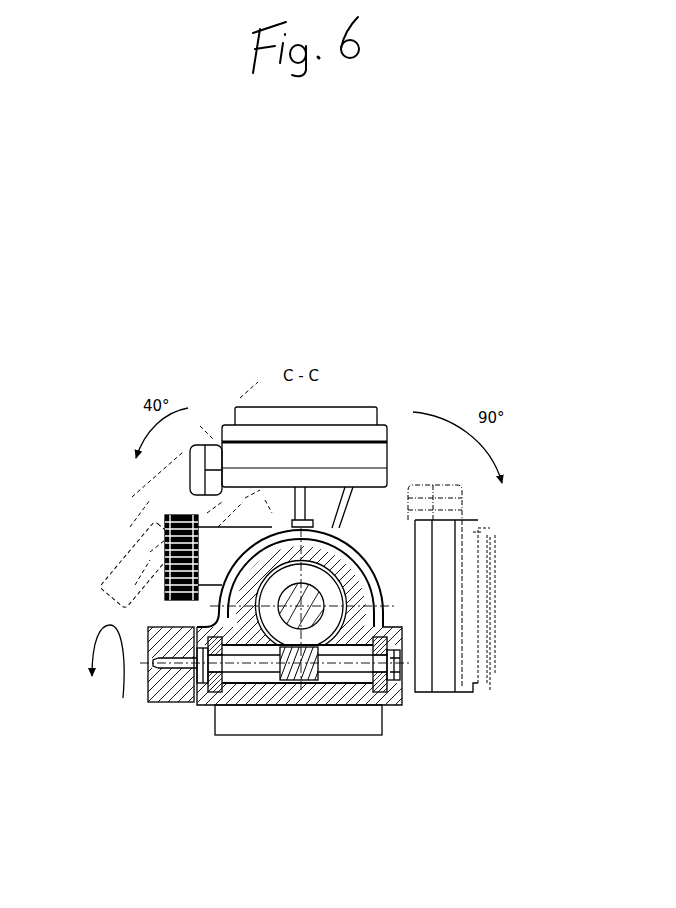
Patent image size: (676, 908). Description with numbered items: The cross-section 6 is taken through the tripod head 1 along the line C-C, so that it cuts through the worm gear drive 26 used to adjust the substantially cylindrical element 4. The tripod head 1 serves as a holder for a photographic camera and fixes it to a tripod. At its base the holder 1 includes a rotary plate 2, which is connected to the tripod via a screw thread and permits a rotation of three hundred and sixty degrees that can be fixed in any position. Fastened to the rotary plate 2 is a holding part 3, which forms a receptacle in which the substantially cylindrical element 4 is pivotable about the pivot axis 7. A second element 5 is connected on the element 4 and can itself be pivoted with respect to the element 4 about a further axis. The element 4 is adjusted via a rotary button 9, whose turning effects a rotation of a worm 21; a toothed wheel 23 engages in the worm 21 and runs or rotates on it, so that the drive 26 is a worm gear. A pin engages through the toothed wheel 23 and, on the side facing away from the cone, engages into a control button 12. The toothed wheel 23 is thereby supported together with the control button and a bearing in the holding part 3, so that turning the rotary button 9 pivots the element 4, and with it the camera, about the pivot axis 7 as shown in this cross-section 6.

The tripod head 1 is at (460, 277).
The rotary plate 2 is at (218, 745).
The holding part 3 is at (414, 704).
The substantially cylindrical element 4 is at (372, 552).
The second element 5 is at (393, 492).
The drive unit 6 is at (376, 390).
The pivot axis 7 is at (300, 606).
The rotary button 9 is at (141, 612).
The control button 12 is at (157, 540).
The worm 21 is at (342, 667).
The toothed wheel 23 is at (350, 599).
The drive 26 is at (167, 720).